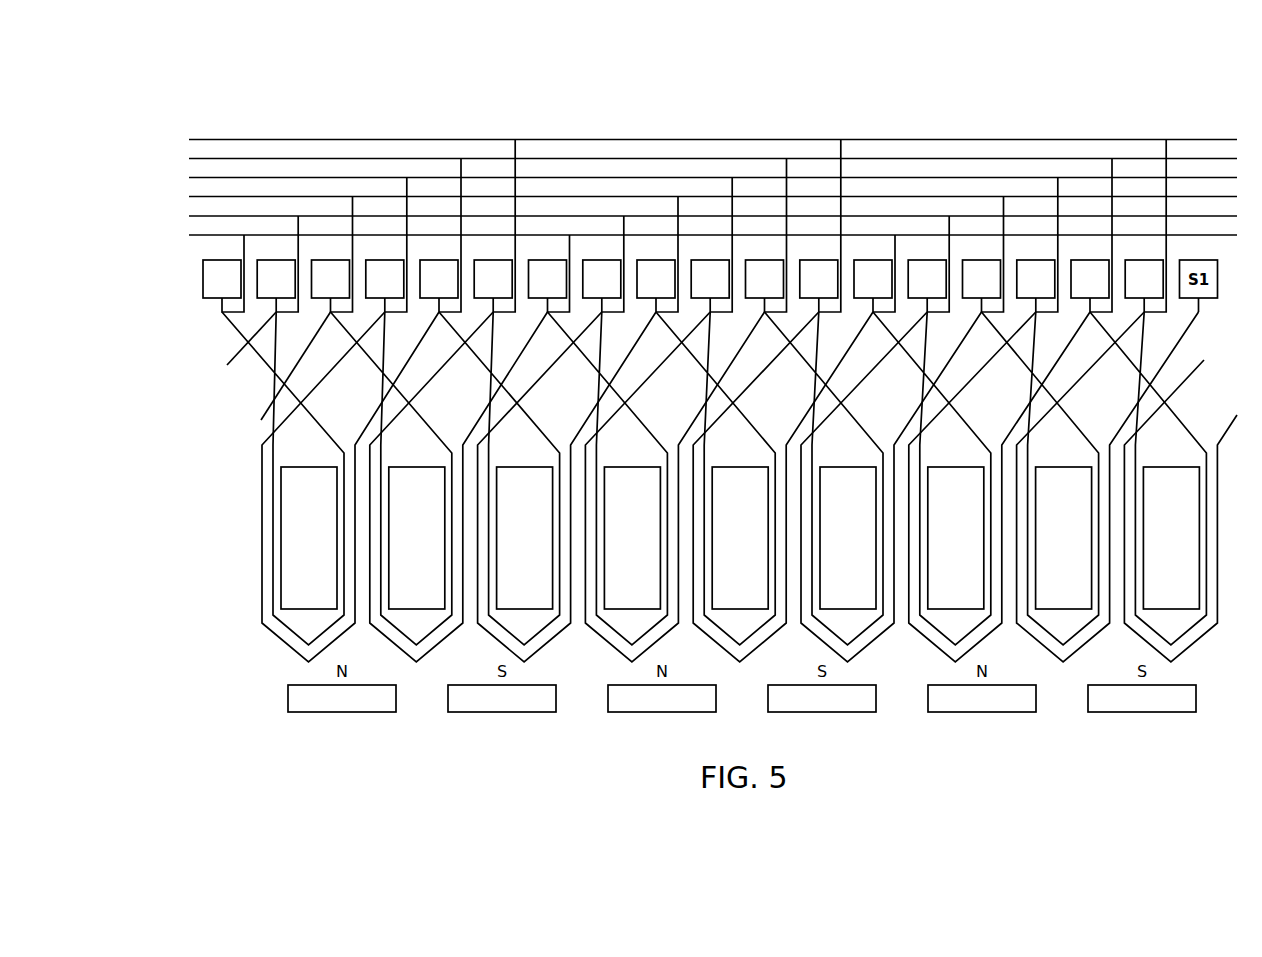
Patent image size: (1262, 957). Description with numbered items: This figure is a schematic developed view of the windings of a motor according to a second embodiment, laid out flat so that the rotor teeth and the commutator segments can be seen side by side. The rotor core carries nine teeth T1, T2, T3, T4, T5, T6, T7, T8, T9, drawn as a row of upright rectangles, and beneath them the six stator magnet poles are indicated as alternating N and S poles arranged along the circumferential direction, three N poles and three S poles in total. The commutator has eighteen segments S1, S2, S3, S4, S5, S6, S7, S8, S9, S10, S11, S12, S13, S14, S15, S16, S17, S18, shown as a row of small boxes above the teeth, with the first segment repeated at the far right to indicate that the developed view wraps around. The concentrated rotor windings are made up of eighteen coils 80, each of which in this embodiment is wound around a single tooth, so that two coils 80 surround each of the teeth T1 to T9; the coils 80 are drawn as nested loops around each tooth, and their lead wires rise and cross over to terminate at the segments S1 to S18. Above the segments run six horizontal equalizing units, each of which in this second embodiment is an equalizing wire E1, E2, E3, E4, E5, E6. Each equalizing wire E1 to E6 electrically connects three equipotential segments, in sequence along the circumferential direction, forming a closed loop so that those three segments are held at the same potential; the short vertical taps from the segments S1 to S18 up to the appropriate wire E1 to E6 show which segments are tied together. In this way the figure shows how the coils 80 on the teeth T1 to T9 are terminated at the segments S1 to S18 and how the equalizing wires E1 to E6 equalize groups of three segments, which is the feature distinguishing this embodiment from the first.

The coil 80 is at (262, 545).
The equalizing wire E1 is at (212, 236).
The equalizing wire E2 is at (268, 217).
The equalizing wire E3 is at (317, 197).
The equalizing wire E4 is at (375, 178).
The equalizing wire E5 is at (427, 159).
The equalizing wire E6 is at (492, 140).
The segment S1 is at (223, 273).
The segment S2 is at (277, 264).
The segment S3 is at (332, 255).
The segment S4 is at (386, 245).
The segment S5 is at (440, 236).
The segment S6 is at (494, 226).
The segment S7 is at (549, 273).
The segment S8 is at (603, 264).
The segment S9 is at (657, 255).
The segment S10 is at (711, 245).
The segment S11 is at (766, 236).
The segment S12 is at (820, 226).
The segment S13 is at (874, 273).
The segment S14 is at (928, 264).
The segment S15 is at (983, 255).
The segment S16 is at (1037, 245).
The segment S17 is at (1091, 236).
The segment S18 is at (1145, 226).
The tooth T1 is at (309, 538).
The tooth T2 is at (417, 538).
The tooth T3 is at (525, 538).
The tooth T4 is at (632, 538).
The tooth T5 is at (740, 538).
The tooth T6 is at (848, 538).
The tooth T7 is at (956, 538).
The tooth T8 is at (1064, 538).
The tooth T9 is at (1171, 538).